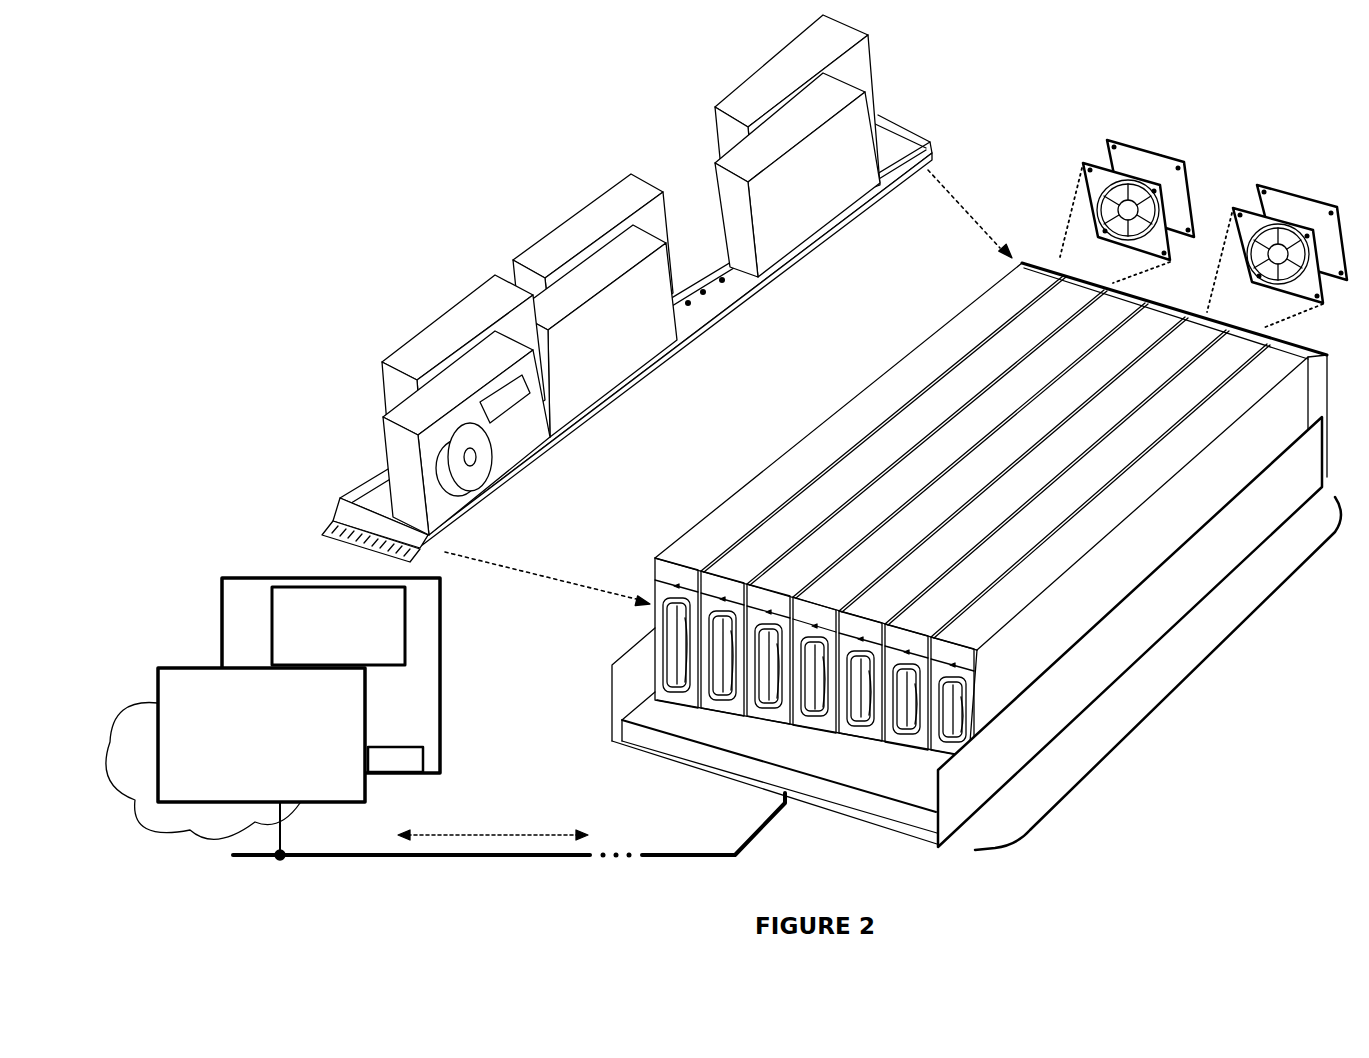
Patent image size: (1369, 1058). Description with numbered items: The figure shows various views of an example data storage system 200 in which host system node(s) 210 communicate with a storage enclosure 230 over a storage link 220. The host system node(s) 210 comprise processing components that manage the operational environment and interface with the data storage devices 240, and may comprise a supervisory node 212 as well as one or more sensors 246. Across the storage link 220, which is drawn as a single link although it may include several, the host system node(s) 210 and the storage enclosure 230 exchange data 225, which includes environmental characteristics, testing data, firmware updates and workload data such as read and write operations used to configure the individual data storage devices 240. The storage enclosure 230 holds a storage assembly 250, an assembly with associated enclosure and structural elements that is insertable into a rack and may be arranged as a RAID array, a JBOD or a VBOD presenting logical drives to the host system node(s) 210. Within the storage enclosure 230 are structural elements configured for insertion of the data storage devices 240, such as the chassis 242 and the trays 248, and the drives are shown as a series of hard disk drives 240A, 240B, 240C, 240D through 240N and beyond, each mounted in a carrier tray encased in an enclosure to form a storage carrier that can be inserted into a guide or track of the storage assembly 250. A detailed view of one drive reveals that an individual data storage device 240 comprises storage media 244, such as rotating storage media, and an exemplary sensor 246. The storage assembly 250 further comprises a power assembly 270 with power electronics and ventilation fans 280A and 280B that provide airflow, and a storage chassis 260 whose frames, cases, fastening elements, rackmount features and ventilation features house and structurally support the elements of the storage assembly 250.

The data storage system 200 is at (378, 208).
The host system node(s) 210 is at (261, 735).
The supervisory node 212 is at (331, 675).
The storage link 220 is at (347, 853).
The data 225 is at (493, 810).
The storage enclosure 230 is at (921, 522).
The data storage devices 240 is at (981, 510).
The HDD 240A is at (466, 433).
The HDD 240B is at (463, 377).
The HDD 240C is at (596, 331).
The HDD 240D is at (593, 274).
The HDD 240N is at (797, 175).
The chassis 242 is at (333, 521).
The storage media 244 is at (488, 472).
The sensor(s) 246 is at (449, 573).
The trays 248 is at (897, 124).
The storage assembly 250 is at (1163, 673).
The storage chassis 260 is at (655, 629).
The power assembly 270 is at (1057, 267).
The fan 280A is at (1128, 146).
The fan 280B is at (1287, 192).